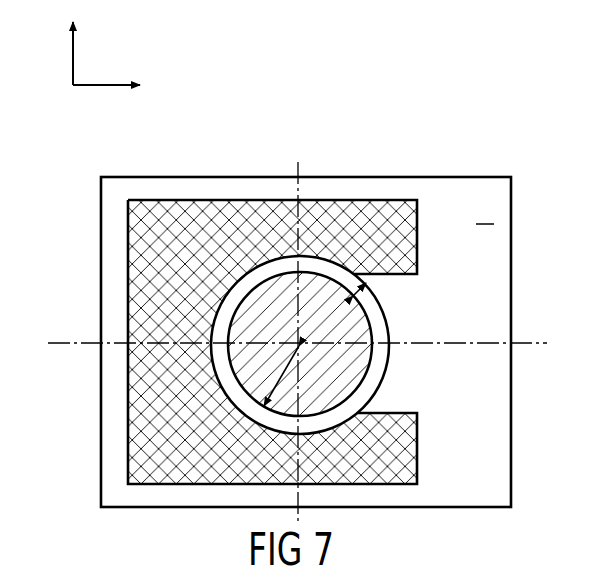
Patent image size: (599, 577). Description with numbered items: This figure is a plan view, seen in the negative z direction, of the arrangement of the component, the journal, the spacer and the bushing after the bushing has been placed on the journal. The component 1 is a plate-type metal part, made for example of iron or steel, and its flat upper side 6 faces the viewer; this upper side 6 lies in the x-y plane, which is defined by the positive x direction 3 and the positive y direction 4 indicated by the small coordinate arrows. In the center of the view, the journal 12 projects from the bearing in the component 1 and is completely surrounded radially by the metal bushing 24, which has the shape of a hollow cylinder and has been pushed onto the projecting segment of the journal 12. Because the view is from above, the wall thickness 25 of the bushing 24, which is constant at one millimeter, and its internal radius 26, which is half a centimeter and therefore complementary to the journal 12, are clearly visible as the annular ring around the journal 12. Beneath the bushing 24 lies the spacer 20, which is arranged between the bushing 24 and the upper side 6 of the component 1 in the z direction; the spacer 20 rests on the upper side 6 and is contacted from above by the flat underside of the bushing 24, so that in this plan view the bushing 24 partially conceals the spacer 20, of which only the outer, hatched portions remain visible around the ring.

The component 1 is at (457, 177).
The positive x direction 3 is at (113, 84).
The positive y direction 4 is at (73, 27).
The upper side 6 is at (485, 210).
The journal 12 is at (367, 355).
The spacer 20 is at (210, 200).
The bushing 24 is at (378, 313).
The wall thickness 25 is at (356, 281).
The internal radius 26 is at (274, 384).